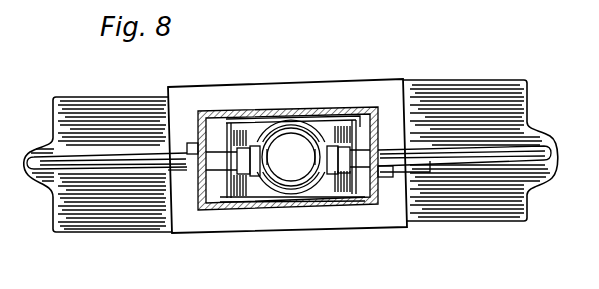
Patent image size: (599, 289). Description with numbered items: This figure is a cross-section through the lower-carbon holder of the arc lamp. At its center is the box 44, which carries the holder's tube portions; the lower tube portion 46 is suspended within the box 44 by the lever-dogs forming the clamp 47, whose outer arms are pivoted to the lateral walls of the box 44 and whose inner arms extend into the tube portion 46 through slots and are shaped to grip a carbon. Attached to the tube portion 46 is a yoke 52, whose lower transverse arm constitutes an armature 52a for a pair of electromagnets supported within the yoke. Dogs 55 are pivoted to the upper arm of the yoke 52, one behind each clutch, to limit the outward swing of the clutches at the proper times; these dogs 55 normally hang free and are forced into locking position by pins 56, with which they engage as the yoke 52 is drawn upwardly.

The box 44 is at (307, 118).
The lower tube portion 46 is at (288, 194).
The clamp 47 is at (210, 206).
The yoke 52 is at (55, 182).
The armature 52a is at (137, 102).
The dogs 55 is at (176, 154).
The pins 56 is at (170, 171).